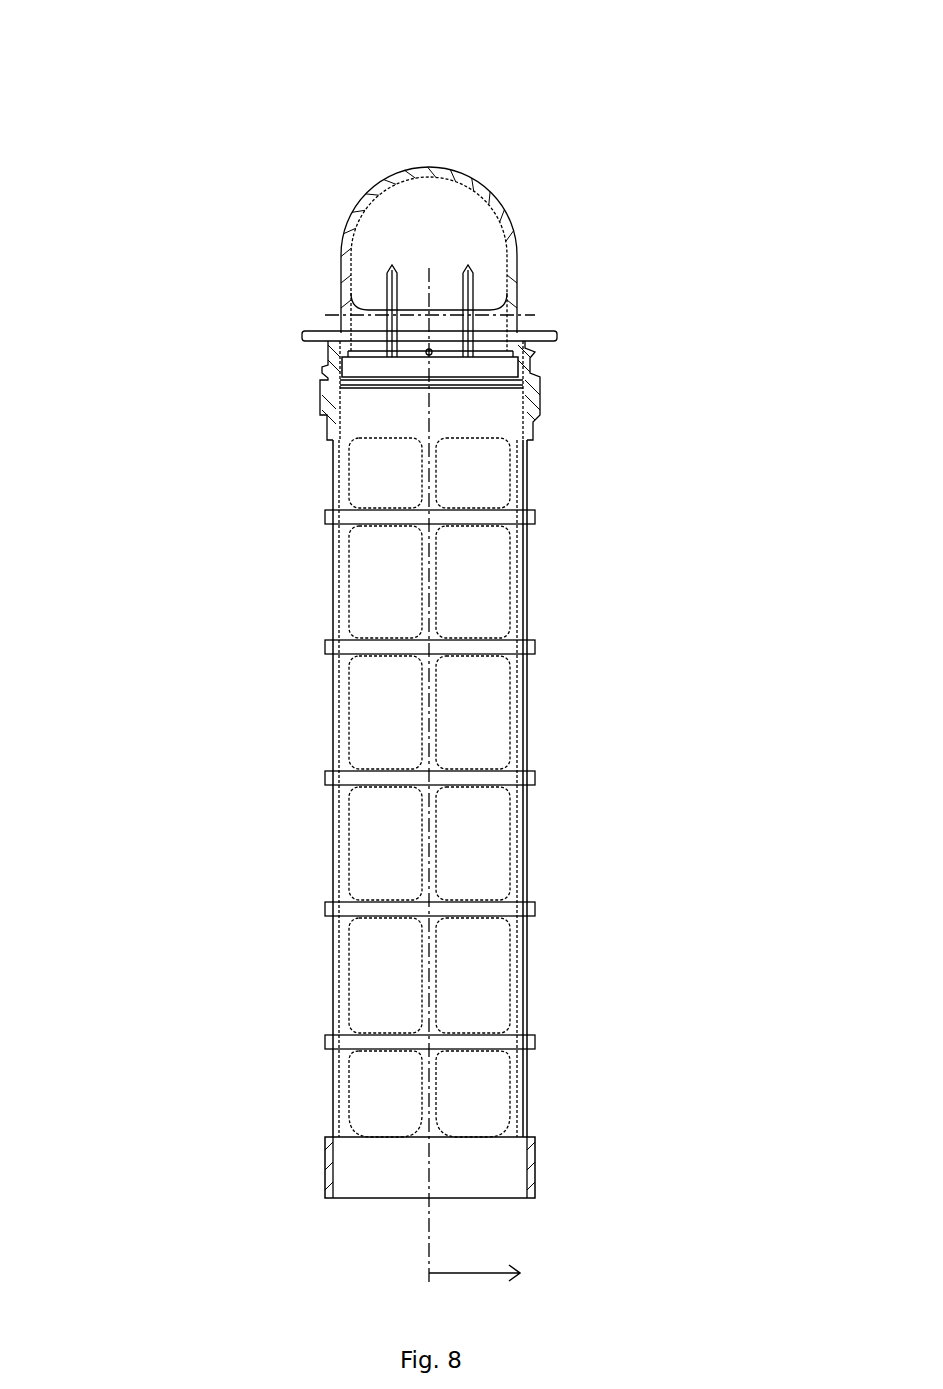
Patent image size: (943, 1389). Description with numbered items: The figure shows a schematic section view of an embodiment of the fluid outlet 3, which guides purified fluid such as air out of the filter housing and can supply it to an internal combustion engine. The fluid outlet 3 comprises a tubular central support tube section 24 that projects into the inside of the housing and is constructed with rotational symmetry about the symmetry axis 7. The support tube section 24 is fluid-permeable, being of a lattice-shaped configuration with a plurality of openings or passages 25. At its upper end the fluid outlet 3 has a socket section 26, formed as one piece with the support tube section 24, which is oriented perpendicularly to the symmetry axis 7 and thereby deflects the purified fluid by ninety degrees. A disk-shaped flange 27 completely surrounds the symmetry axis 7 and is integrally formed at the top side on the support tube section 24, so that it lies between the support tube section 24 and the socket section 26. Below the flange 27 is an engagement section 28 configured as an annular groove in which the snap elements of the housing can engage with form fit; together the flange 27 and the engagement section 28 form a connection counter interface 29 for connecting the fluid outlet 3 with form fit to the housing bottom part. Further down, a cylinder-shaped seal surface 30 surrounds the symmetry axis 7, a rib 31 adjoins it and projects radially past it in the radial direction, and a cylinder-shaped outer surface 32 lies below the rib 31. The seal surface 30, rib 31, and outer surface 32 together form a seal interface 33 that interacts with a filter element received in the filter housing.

The fluid outlet 3 is at (428, 70).
The symmetry axis 7 is at (429, 1245).
The support tube section 24 is at (525, 769).
The passages 25 is at (486, 996).
The socket section 26 is at (487, 192).
The flange 27 is at (557, 335).
The engagement section 28 is at (540, 377).
The connection counter interface 29 is at (566, 367).
The seal surface 30 is at (320, 388).
The rib 31 is at (320, 412).
The outer surface 32 is at (327, 435).
The seal interface 33 is at (196, 386).